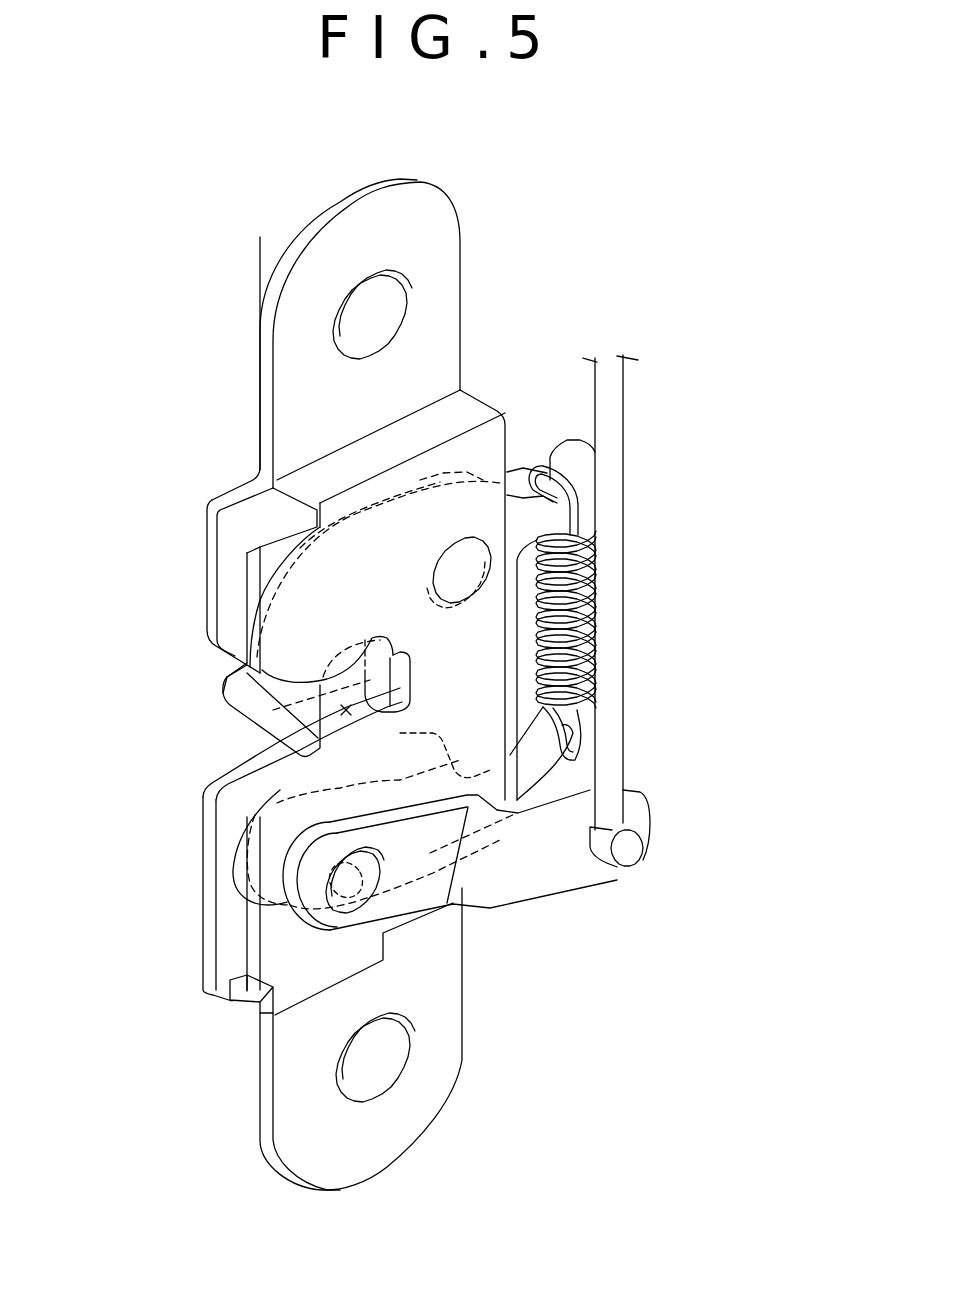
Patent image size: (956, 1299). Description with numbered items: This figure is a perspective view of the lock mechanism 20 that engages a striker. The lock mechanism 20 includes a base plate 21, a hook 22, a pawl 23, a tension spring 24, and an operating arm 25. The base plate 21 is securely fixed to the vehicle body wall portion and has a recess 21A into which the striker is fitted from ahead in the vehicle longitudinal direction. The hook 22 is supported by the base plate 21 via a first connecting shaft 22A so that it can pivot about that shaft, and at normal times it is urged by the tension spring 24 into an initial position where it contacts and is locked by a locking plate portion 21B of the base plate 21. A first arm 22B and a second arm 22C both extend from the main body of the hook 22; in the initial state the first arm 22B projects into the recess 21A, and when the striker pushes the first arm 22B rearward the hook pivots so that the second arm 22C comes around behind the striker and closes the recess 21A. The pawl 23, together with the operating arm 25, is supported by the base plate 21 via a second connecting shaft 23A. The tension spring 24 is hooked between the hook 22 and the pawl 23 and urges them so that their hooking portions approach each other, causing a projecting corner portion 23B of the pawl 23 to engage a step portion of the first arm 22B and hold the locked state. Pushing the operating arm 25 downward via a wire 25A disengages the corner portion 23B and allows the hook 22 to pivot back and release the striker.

The lock mechanism 20 is at (656, 307).
The base plate 21 is at (292, 463).
The recess 21A is at (343, 710).
The locking plate portion 21B is at (287, 498).
The hook 22 is at (244, 681).
The first connecting shaft 22A is at (438, 561).
The first arm 22B is at (465, 745).
The second arm 22C is at (303, 732).
The pawl 23 is at (490, 785).
The second connecting shaft 23A is at (347, 880).
The corner portion 23B is at (477, 753).
The tension spring 24 is at (587, 595).
The operating arm 25 is at (568, 870).
The wire 25A is at (608, 483).